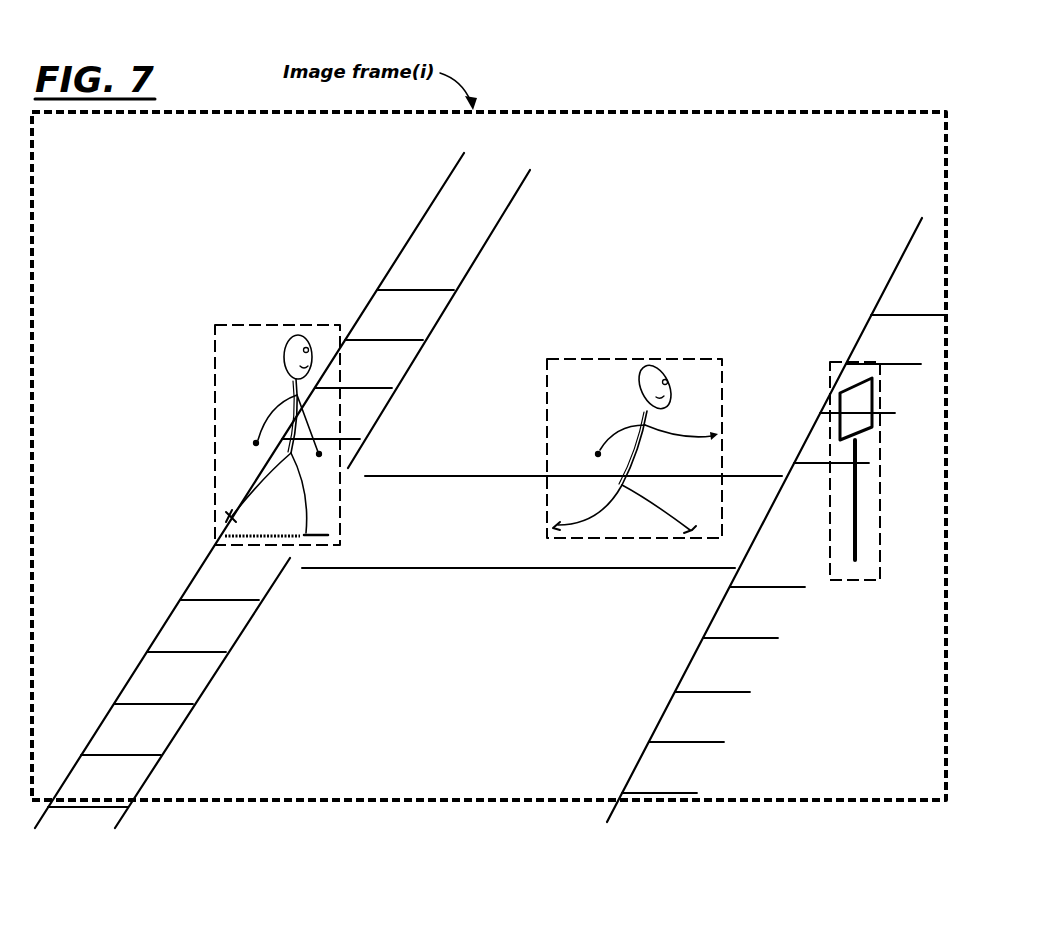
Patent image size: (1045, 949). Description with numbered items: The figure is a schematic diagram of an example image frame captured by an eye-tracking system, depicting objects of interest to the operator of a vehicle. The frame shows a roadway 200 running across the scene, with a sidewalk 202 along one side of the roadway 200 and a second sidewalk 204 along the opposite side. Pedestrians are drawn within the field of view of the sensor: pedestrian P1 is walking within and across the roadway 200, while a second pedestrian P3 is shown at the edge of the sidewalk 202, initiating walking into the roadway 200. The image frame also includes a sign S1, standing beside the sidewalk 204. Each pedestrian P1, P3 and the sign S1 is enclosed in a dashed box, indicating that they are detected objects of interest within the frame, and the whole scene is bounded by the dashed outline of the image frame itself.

The roadway 200 is at (426, 723).
The sidewalk 202 is at (172, 590).
The sidewalk 204 is at (675, 667).
The pedestrian P1 is at (642, 378).
The pedestrian P3 is at (283, 338).
The sign S1 is at (843, 392).